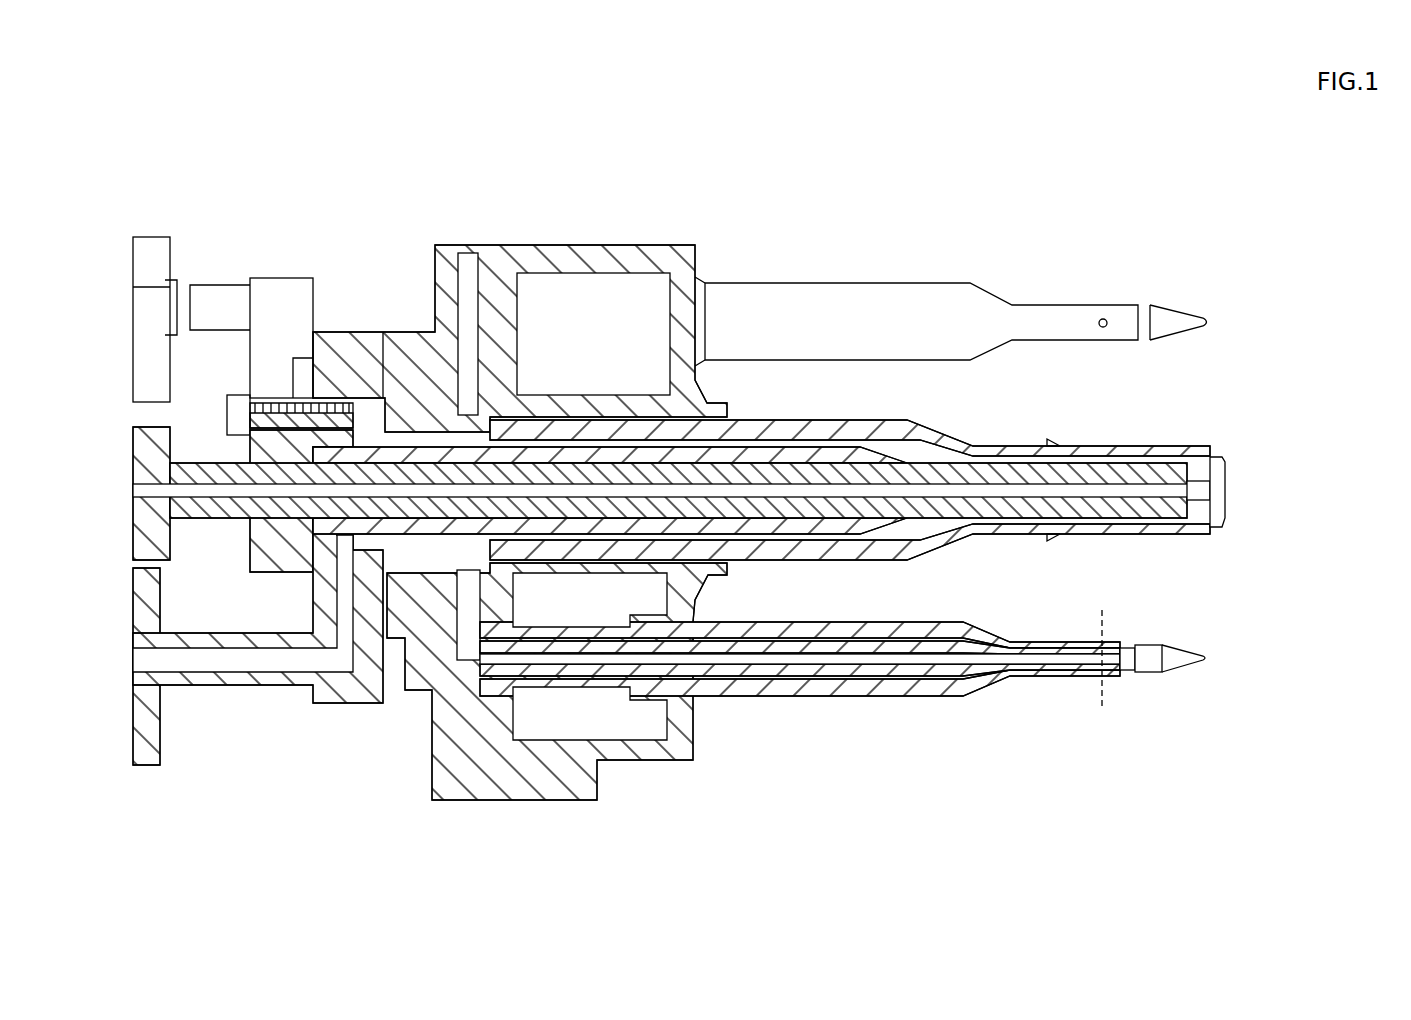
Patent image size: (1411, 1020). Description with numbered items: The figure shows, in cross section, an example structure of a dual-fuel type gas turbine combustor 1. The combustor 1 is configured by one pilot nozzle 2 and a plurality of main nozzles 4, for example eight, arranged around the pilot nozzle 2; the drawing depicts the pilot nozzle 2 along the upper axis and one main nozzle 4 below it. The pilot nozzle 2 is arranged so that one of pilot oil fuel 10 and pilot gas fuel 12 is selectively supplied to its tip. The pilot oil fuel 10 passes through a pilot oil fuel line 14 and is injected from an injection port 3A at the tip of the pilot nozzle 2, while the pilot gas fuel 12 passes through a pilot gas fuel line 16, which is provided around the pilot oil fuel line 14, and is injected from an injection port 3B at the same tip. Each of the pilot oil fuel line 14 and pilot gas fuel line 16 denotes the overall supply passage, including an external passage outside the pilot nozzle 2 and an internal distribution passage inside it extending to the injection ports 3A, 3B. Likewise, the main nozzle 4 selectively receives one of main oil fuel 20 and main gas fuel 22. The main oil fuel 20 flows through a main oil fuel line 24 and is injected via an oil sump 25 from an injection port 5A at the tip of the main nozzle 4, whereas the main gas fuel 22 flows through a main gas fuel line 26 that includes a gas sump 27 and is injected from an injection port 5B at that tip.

The gas turbine combustor 1 is at (1189, 166).
The pilot nozzle 2 is at (1000, 446).
The injection port 3A is at (1226, 510).
The injection port 3B is at (1222, 448).
The main nozzle 4 is at (993, 283).
The injection port 5A is at (1150, 645).
The injection port 5B is at (1100, 645).
The pilot oil fuel 10 is at (133, 490).
The pilot gas fuel 12 is at (133, 658).
The pilot oil fuel line 14 is at (725, 490).
The pilot gas fuel line 16 is at (712, 410).
The main oil fuel 20 is at (1148, 645).
The main gas fuel 22 is at (1102, 610).
The main oil fuel line 24 is at (902, 664).
The oil sump 25 is at (1135, 672).
The main gas fuel line 26 is at (838, 641).
The gas sump 27 is at (565, 605).